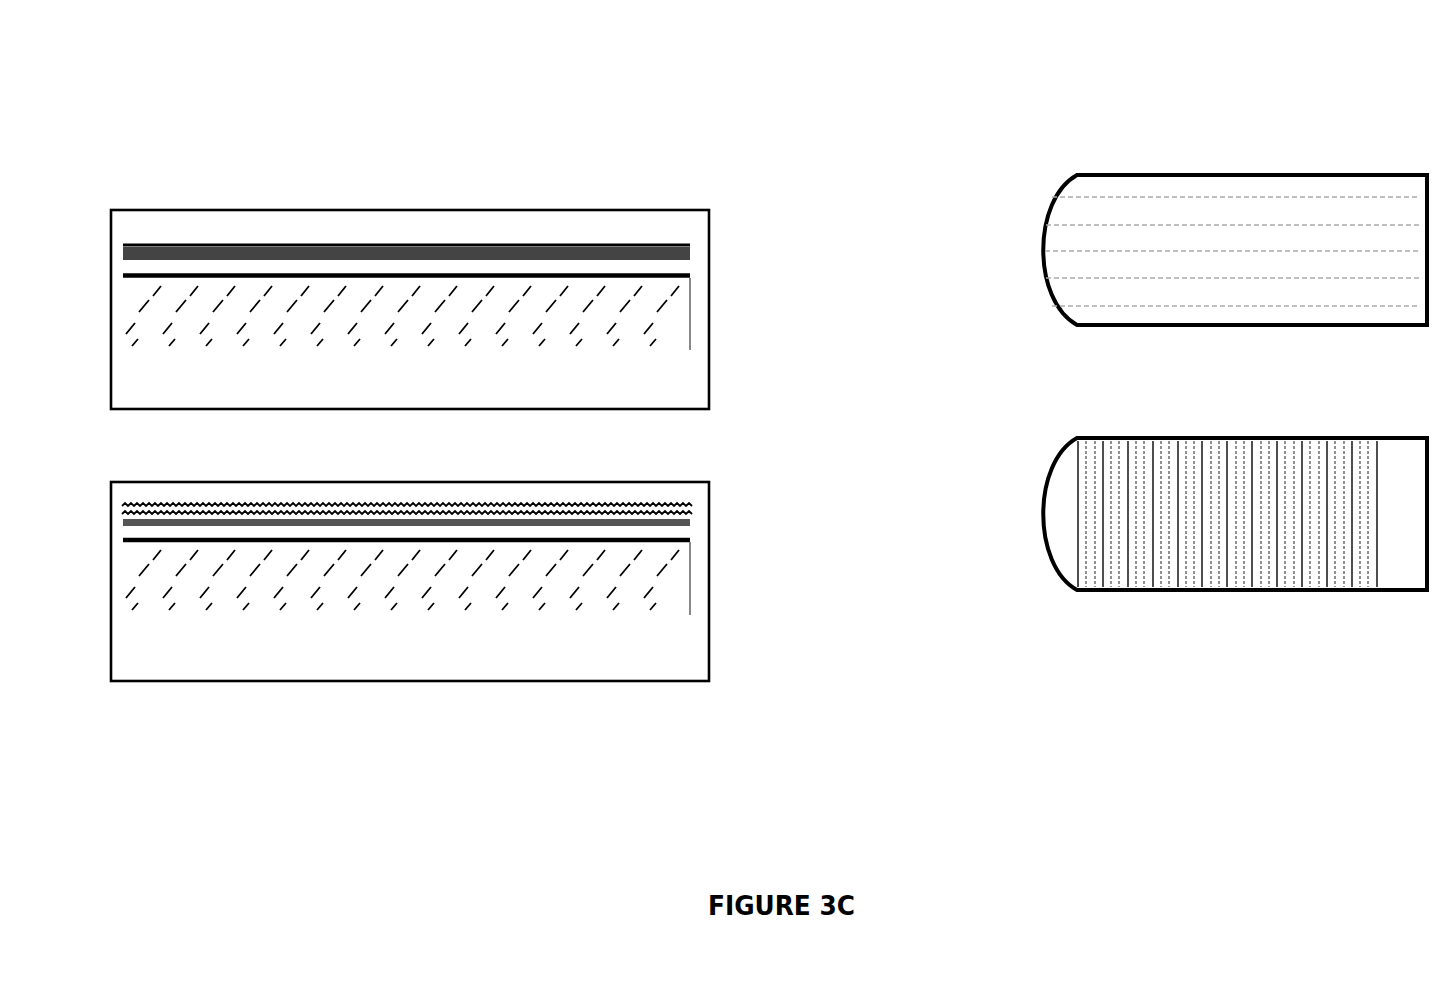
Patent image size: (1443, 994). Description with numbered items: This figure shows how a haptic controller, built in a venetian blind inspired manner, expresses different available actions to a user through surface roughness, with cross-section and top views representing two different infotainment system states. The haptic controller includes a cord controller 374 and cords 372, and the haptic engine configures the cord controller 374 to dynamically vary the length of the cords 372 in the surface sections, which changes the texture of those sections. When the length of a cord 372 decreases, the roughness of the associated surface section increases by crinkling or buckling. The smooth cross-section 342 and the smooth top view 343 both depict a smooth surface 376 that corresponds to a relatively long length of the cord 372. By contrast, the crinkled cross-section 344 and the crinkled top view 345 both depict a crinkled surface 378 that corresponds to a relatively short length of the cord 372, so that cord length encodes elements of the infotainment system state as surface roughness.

The smooth cross-section 342 is at (557, 396).
The smooth top view 343 is at (1113, 175).
The crinkled cross-section 344 is at (557, 670).
The crinkled top view 345 is at (1115, 592).
The cord 372 is at (684, 260).
The cord controller 374 is at (613, 303).
The smooth surface 376 is at (690, 244).
The crinkled surface 378 is at (695, 508).